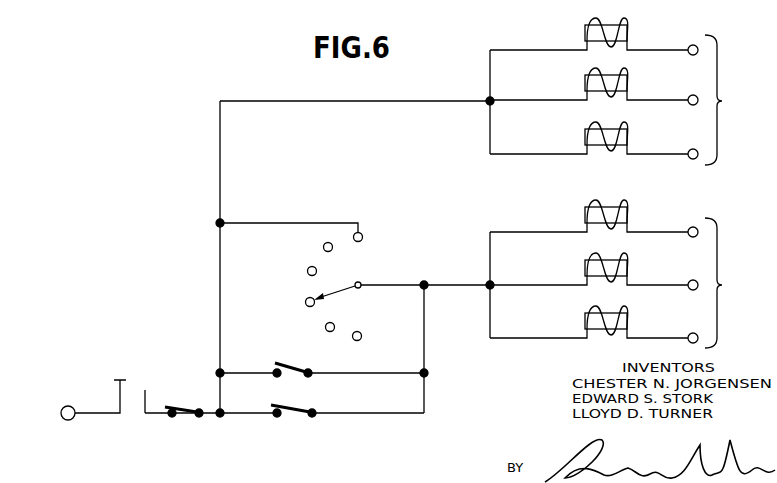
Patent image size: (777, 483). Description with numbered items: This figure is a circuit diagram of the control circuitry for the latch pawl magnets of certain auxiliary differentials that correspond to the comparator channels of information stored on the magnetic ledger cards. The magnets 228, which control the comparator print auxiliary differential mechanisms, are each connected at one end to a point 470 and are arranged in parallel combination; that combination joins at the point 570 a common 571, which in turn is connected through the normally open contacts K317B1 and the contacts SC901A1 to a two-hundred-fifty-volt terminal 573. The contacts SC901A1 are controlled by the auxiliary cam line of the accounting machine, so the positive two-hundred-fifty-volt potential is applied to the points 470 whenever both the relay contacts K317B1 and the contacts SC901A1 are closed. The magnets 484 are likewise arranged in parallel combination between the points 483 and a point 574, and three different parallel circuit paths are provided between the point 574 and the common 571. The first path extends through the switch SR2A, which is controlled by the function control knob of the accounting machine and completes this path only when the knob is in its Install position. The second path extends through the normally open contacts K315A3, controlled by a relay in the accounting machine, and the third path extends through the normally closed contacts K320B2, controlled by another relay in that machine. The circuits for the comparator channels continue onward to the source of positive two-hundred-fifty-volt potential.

The magnets 228 is at (582, 32).
The points 470 is at (691, 44).
The magnets 484 is at (582, 218).
The points 483 is at (691, 226).
The point 570 is at (488, 99).
The common 571 is at (220, 166).
The point 574 is at (488, 283).
The +250-volt terminal 573 is at (62, 410).
The switch SR2A is at (296, 280).
The normally open contacts K315A3 is at (290, 365).
The normally closed contacts K320B2 is at (288, 405).
The normally open contacts K317B1 is at (185, 416).
The contacts SC901A1 is at (155, 361).